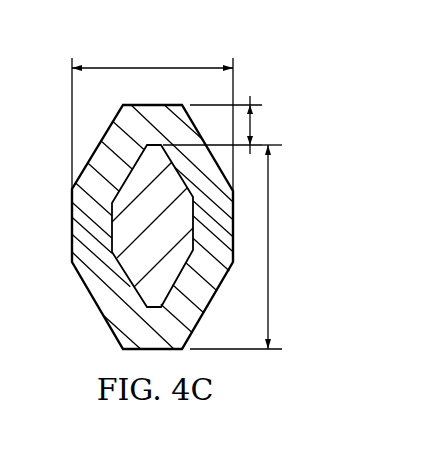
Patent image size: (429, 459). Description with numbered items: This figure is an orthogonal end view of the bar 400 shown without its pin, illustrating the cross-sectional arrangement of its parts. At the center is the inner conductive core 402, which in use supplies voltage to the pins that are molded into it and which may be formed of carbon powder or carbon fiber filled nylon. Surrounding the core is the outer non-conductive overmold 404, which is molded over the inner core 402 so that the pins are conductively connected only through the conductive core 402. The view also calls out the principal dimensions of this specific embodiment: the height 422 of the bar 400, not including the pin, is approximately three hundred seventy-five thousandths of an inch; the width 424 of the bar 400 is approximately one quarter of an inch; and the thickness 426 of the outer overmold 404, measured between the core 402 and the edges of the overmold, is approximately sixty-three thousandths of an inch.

The bar 400 is at (51, 129).
The inner conductive core 402 is at (120, 239).
The outer non-conductive overmold 404 is at (90, 292).
The height 422 is at (284, 258).
The width 424 is at (152, 106).
The thickness 426 is at (264, 113).